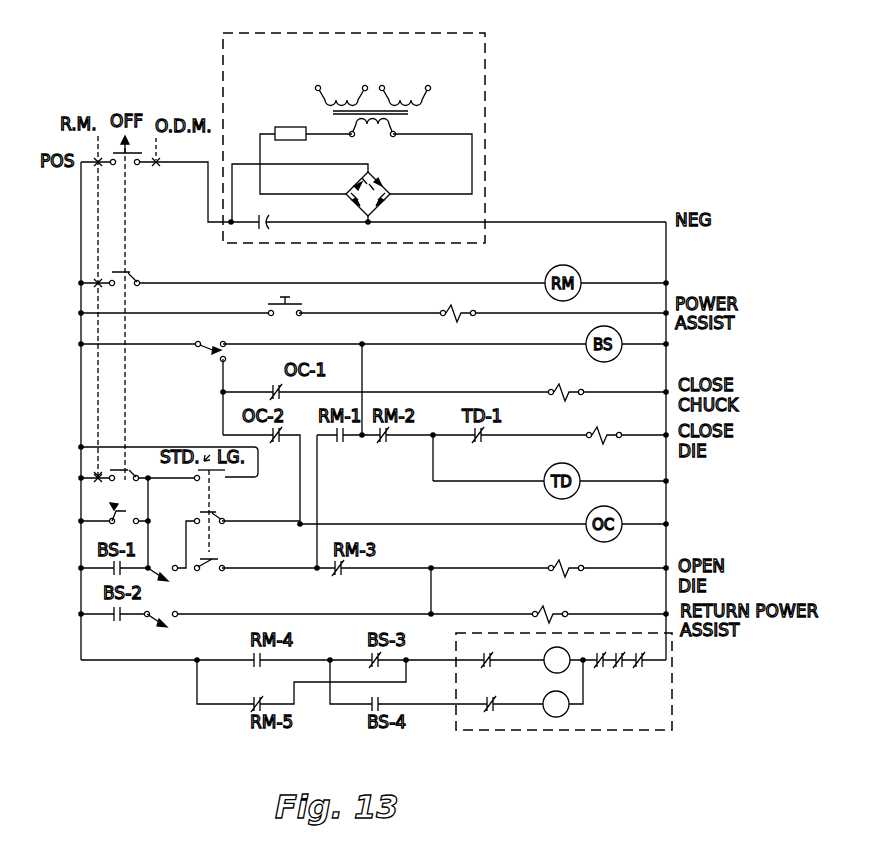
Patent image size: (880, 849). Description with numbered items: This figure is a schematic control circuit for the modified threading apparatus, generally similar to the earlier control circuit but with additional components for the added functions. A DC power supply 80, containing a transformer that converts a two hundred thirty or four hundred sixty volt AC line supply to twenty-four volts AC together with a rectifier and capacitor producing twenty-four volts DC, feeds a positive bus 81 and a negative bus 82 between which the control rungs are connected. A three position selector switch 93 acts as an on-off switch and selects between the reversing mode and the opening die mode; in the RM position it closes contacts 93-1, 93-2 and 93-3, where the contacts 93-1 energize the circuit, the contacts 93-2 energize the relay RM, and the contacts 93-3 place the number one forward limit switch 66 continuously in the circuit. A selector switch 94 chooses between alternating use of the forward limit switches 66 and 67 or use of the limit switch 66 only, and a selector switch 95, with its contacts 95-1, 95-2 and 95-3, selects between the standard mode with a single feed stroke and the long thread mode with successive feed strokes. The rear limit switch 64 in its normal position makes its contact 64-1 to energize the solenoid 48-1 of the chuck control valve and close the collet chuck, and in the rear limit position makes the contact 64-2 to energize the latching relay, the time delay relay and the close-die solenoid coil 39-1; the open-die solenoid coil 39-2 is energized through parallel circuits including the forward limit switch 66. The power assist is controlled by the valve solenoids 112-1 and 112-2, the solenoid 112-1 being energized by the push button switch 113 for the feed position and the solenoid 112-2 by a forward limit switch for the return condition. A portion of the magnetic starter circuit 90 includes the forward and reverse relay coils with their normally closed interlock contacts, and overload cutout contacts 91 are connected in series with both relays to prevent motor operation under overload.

The power supply 80 is at (486, 81).
The positive bus 81 is at (82, 206).
The negative bus 82 is at (668, 262).
The three position selector switch 93 is at (125, 237).
The contacts of selector switch 93 93-1 is at (114, 164).
The contacts of selector switch 93 93-2 is at (138, 277).
The contacts of selector switch 93 93-3 is at (133, 470).
The selector switch 94 is at (118, 515).
The selector switch 95 is at (210, 540).
The contact of selector switch 95 95-1 is at (222, 481).
The contact of selector switch 95 95-2 is at (226, 516).
The contact of selector switch 95 95-3 is at (226, 563).
The rear limit switch 64 is at (206, 350).
The contact of rear limit switch 64-1 is at (223, 362).
The contact of rear limit switch 64-2 is at (223, 342).
The first forward limit switch 66 is at (170, 582).
The forward limit switch 67 is at (170, 628).
The switch 113 is at (262, 300).
The operating solenoid 112-1 is at (447, 306).
The operating solenoid 112-2 is at (545, 607).
The solenoid of chuck control valve 48-1 is at (558, 383).
The solenoid coil 39-1 is at (597, 433).
The solenoid coil 39-2 is at (558, 565).
The magnetic starter circuit 90 is at (564, 699).
The overload cutout contacts 91 is at (600, 669).